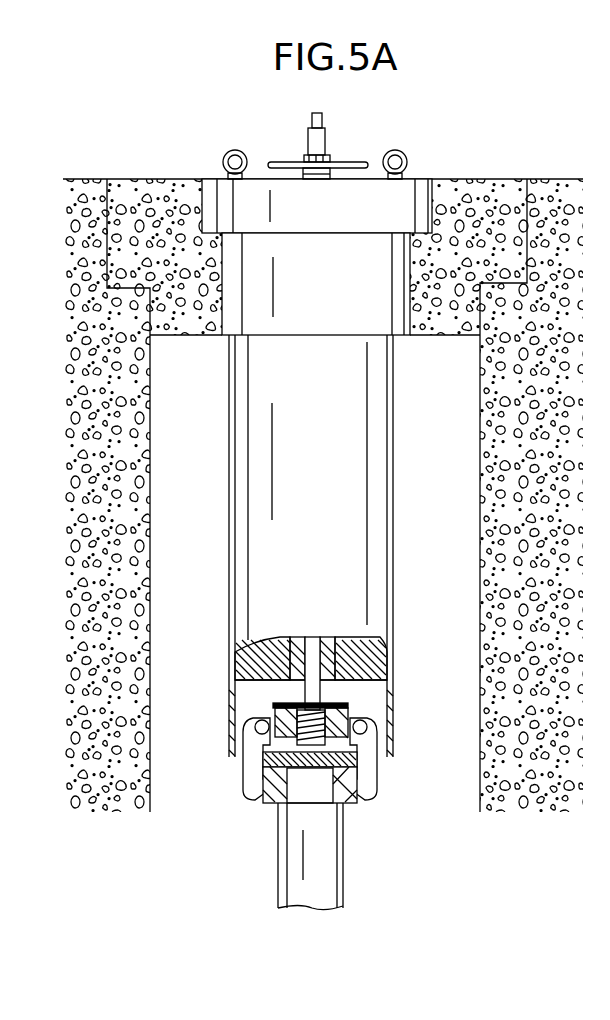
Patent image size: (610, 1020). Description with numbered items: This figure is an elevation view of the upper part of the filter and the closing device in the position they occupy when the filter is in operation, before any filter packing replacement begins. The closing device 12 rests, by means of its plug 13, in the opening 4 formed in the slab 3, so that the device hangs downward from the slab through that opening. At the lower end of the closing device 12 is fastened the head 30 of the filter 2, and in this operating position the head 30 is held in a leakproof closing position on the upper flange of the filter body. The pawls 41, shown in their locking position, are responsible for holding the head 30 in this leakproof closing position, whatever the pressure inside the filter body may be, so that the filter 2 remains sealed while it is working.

The filter 2 is at (338, 845).
The slab 3 is at (473, 198).
The opening 4 is at (420, 196).
The closing device 12 is at (392, 472).
The plug 13 is at (250, 200).
The head 30 is at (262, 783).
The pawls 41 is at (373, 785).